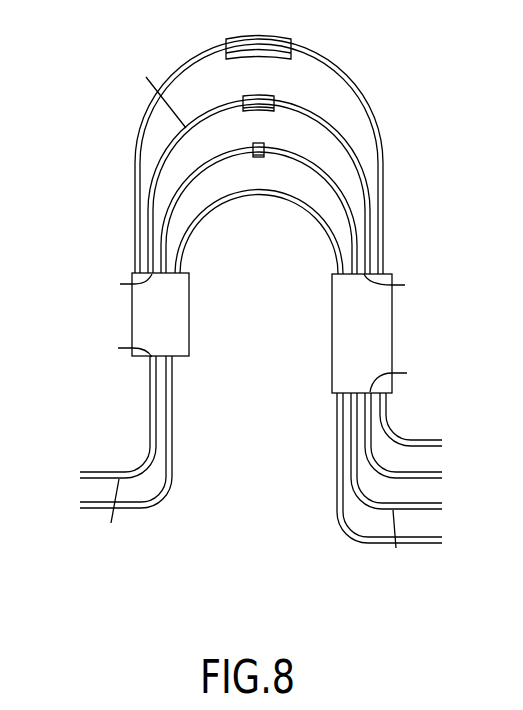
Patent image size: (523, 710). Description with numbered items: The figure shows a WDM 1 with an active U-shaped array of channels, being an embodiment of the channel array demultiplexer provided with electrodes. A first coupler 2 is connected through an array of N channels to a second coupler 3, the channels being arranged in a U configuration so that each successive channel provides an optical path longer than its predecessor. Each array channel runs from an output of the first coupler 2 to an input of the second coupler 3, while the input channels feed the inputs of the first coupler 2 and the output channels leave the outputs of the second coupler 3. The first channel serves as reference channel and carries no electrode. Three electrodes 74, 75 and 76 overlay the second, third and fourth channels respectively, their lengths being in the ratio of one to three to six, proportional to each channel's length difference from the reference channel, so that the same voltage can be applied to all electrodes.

The WDM 1 is at (77, 138).
The first coupler 2 is at (146, 312).
The second coupler 3 is at (378, 322).
The electrode 74 is at (255, 143).
The electrode 75 is at (263, 95).
The electrode 76 is at (271, 36).